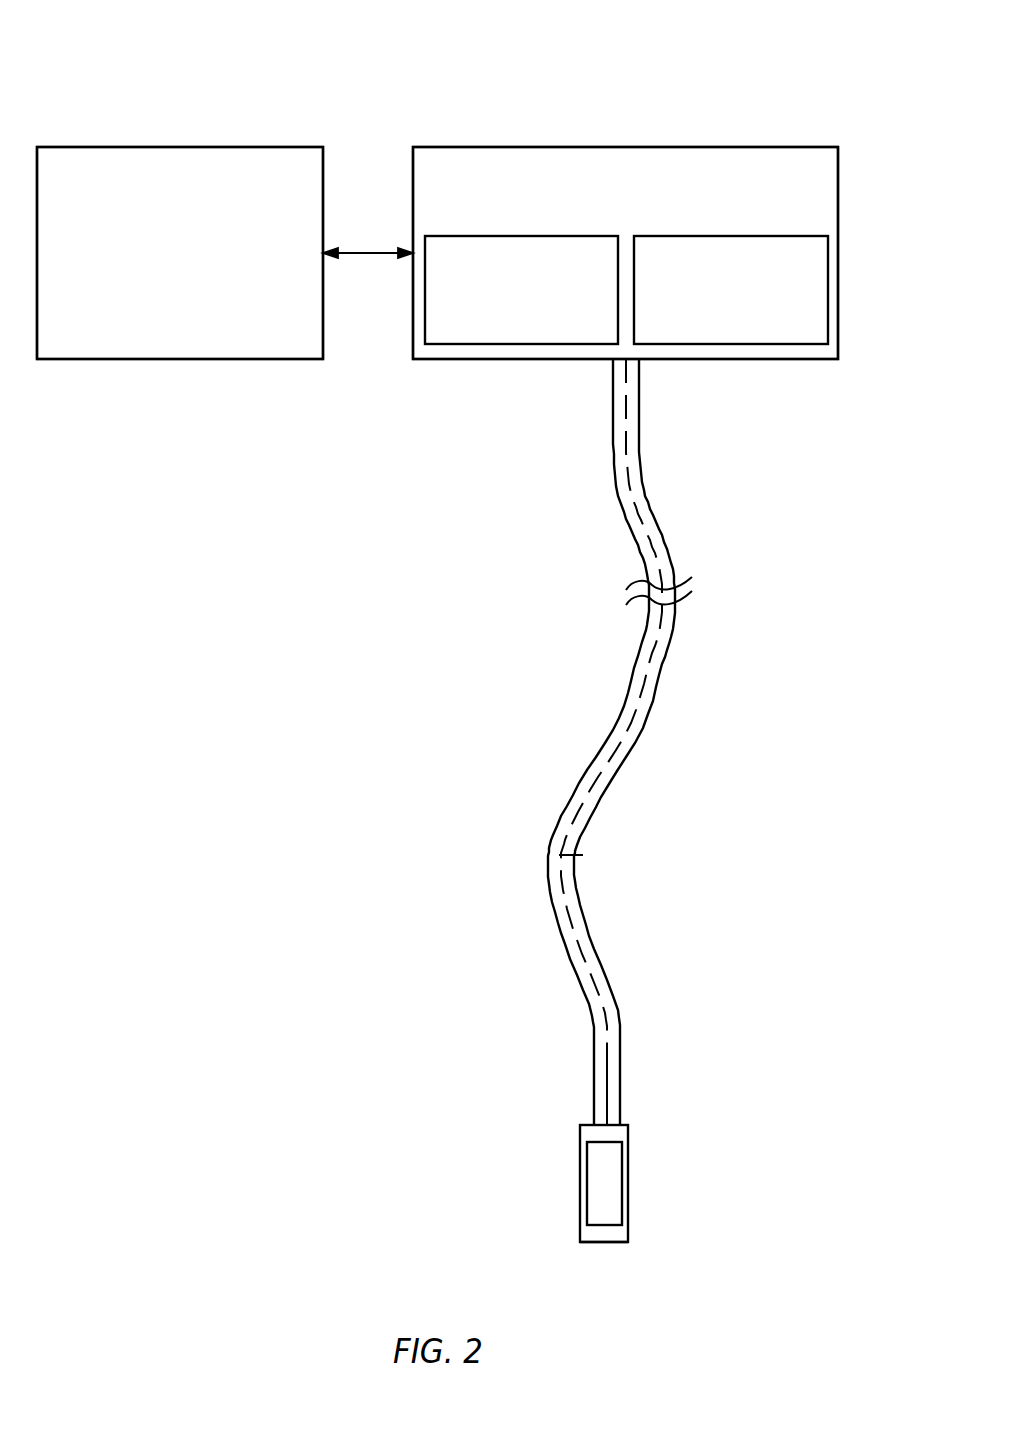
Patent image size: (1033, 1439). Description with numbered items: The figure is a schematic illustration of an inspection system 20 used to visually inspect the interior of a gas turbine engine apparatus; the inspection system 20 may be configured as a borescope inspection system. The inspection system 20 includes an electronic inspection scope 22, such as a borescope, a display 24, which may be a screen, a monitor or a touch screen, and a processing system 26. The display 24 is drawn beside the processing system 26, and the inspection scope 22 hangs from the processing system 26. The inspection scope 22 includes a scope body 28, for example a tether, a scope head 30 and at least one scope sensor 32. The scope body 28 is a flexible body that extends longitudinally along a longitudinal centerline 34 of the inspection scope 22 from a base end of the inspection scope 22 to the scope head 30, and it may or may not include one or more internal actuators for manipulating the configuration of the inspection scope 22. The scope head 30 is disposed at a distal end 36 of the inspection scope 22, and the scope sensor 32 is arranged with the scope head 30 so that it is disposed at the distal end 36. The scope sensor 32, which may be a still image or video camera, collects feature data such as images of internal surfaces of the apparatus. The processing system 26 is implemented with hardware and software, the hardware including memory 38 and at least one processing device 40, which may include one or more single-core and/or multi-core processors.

The inspection system 20 is at (738, 68).
The electronic inspection scope 22 is at (682, 650).
The display 24 is at (135, 359).
The processing system 26 is at (583, 147).
The scope body 28 is at (642, 725).
The scope head 30 is at (628, 1203).
The scope sensor 32 is at (622, 1172).
The longitudinal centerline 34 is at (582, 858).
The distal end 36 is at (612, 1243).
The memory 38 is at (744, 347).
The processing device 40 is at (497, 345).